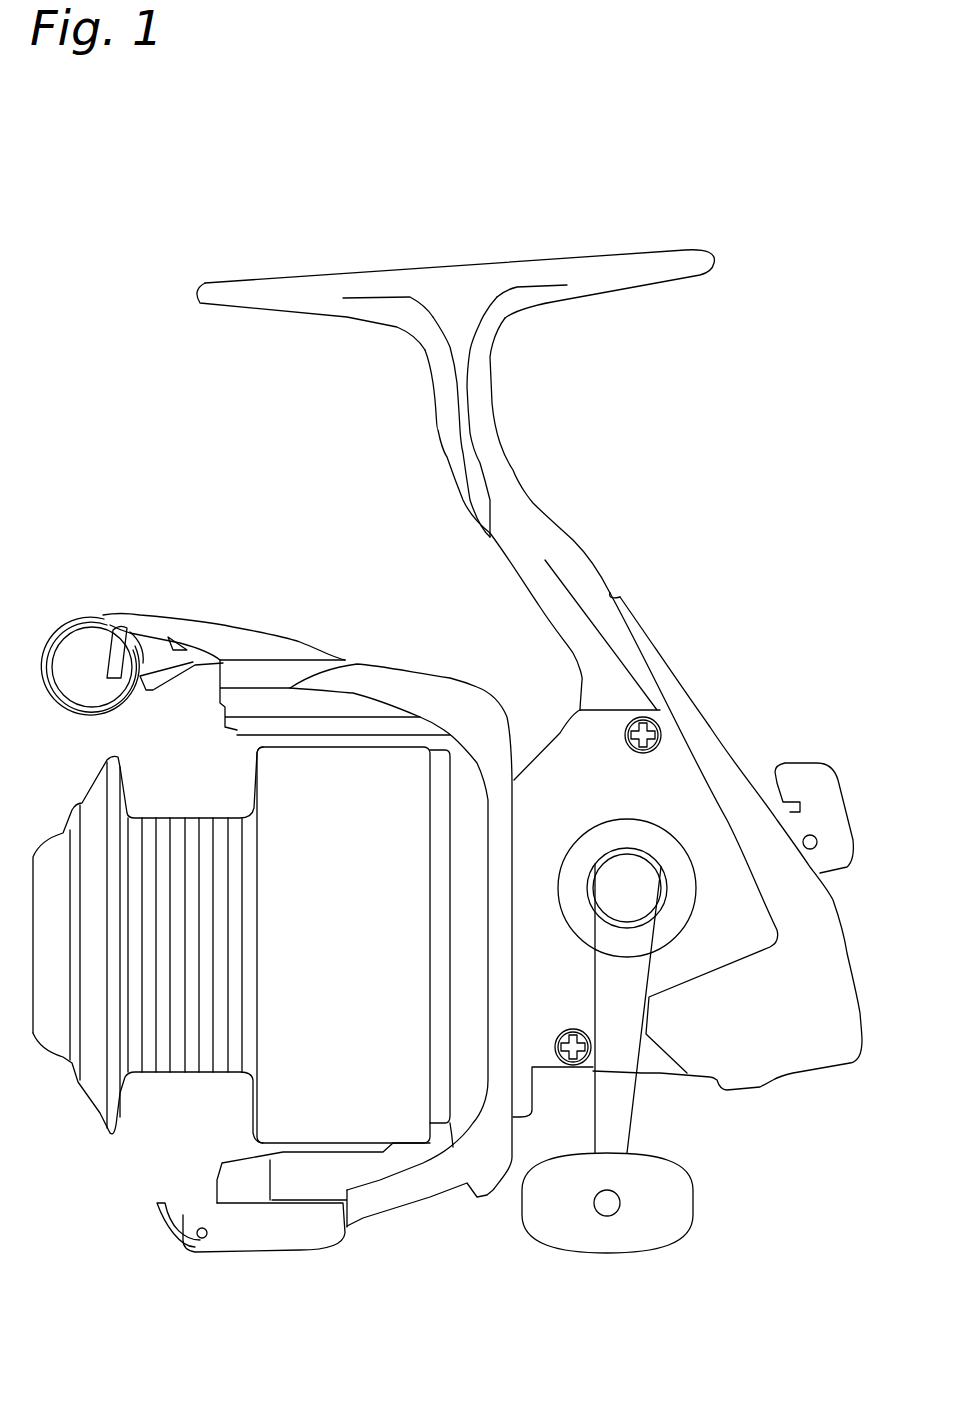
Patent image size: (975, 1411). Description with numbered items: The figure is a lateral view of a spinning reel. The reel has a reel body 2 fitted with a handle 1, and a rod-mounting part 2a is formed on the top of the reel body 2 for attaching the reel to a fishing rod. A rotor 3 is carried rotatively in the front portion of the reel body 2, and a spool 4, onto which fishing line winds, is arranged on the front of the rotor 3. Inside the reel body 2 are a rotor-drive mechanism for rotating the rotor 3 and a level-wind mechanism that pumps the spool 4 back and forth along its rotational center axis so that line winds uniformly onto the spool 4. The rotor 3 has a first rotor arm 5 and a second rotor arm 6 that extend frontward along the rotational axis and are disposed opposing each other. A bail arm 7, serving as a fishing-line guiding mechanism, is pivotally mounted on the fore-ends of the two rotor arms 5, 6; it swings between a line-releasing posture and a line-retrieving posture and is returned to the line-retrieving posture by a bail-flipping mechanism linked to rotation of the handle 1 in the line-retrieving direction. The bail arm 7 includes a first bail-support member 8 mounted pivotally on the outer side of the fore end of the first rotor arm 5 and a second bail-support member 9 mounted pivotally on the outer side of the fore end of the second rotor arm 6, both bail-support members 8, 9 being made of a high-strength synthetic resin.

The handle 1 is at (637, 1118).
The reel body 2 is at (598, 546).
The rod-mounting part 2a is at (591, 268).
The rotor 3 is at (463, 1164).
The spool 4 is at (163, 1042).
The first rotor arm 5 is at (377, 683).
The second rotor arm 6 is at (393, 1195).
The bail arm 7 is at (99, 728).
The first bail-support member 8 is at (262, 652).
The second bail-support member 9 is at (263, 1227).